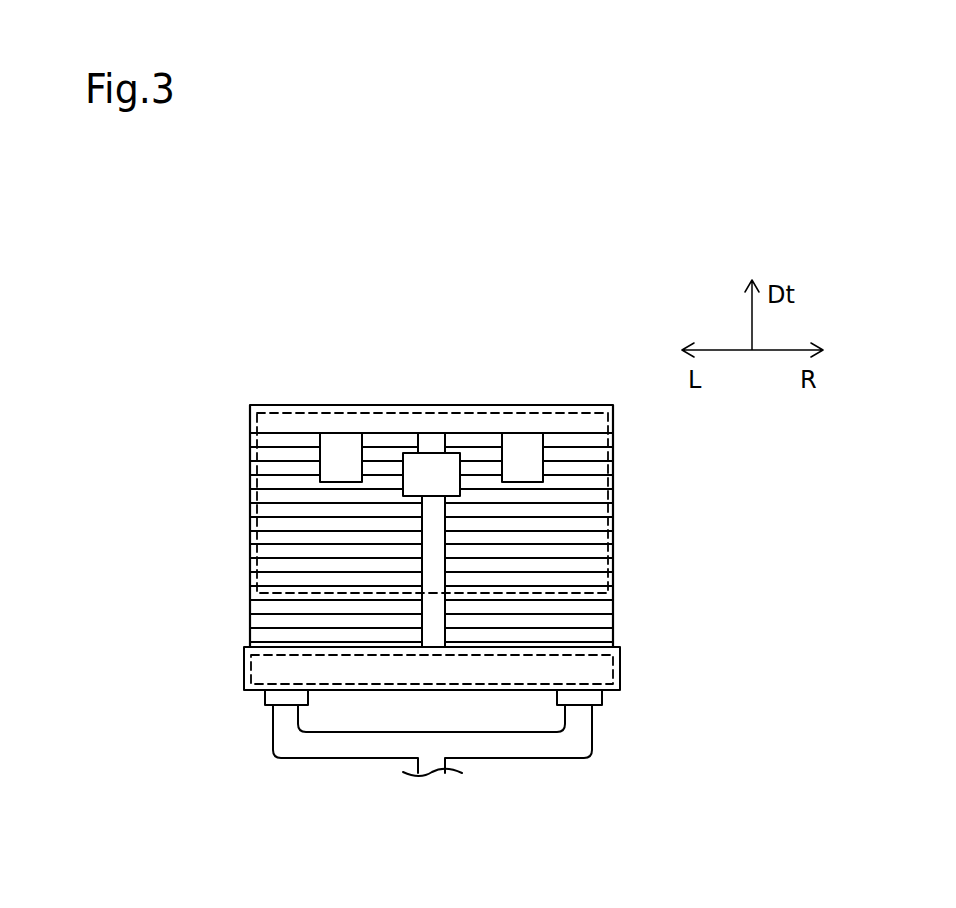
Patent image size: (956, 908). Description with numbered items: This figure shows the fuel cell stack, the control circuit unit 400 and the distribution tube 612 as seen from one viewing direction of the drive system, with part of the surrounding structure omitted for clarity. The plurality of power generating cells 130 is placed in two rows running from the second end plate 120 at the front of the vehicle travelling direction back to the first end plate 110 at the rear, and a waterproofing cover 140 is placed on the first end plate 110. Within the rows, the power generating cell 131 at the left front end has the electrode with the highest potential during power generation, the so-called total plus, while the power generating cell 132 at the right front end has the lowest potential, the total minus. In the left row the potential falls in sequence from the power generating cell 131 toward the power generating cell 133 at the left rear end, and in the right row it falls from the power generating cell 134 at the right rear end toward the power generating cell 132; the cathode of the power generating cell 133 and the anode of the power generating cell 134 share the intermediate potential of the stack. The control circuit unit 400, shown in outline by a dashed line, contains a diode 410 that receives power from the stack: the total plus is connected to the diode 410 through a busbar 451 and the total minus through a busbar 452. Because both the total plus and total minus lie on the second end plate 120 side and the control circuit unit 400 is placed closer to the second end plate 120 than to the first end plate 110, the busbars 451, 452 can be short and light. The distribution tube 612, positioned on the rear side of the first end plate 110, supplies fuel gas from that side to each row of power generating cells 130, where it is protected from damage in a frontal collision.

The first end plate 110 is at (243, 682).
The second end plate 120 is at (250, 417).
The power generating cells 130 is at (433, 525).
The power generating cell 131 is at (293, 437).
The power generating cell 132 is at (572, 440).
The power generating cell 133 is at (345, 647).
The power generating cell 134 is at (520, 647).
The waterproofing cover 140 is at (245, 692).
The control circuit unit 400 is at (377, 413).
The diode 410 is at (467, 452).
The busbar 451 is at (338, 440).
The busbar 452 is at (525, 440).
The distribution tube 612 is at (507, 760).